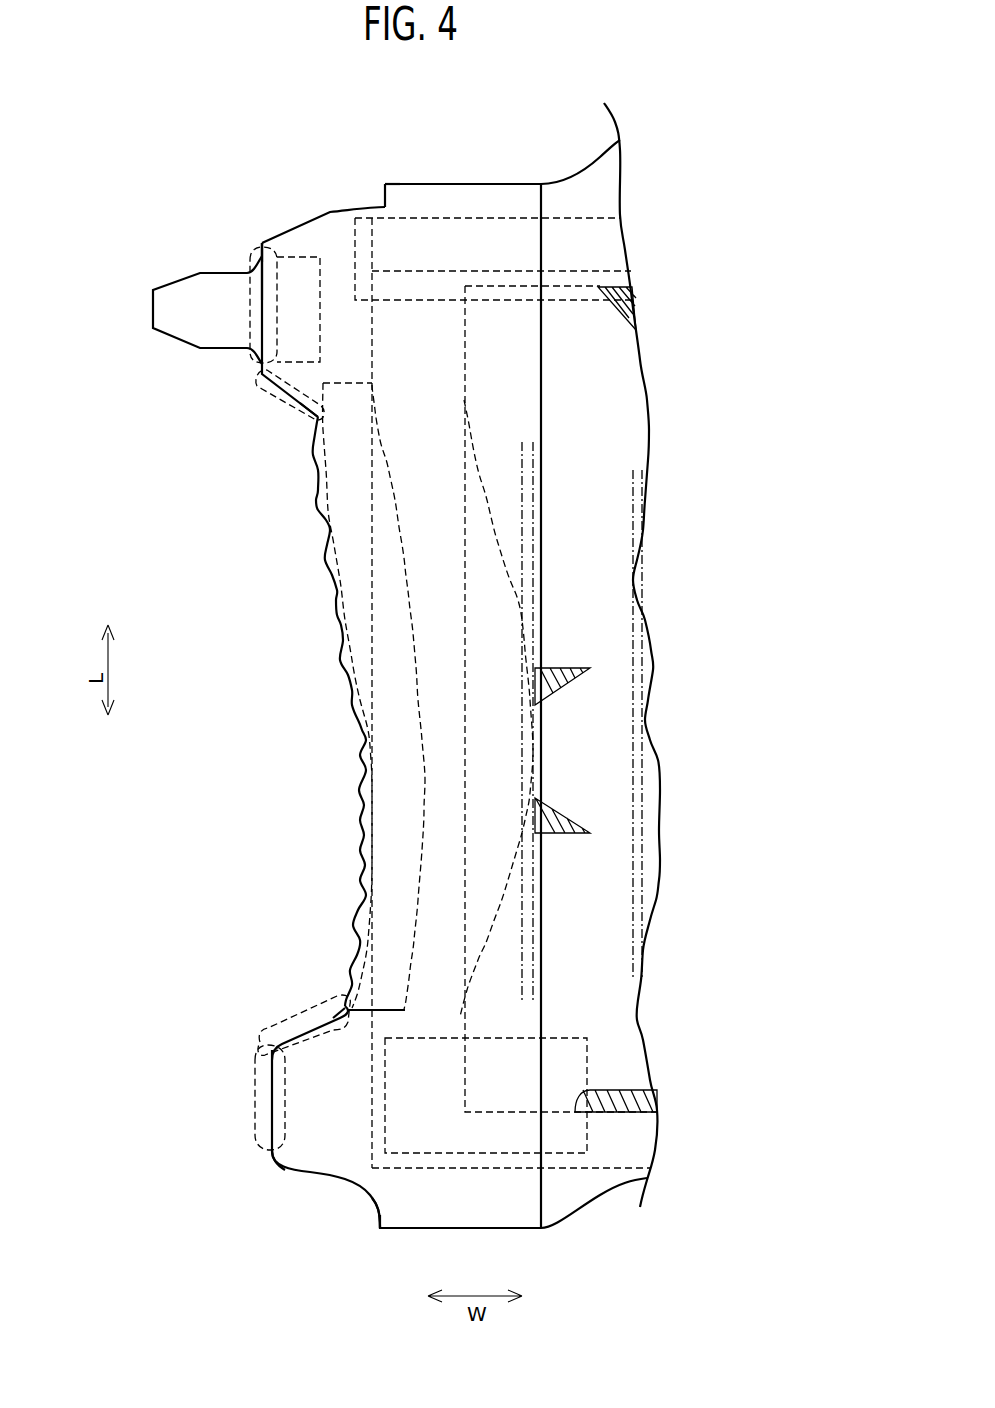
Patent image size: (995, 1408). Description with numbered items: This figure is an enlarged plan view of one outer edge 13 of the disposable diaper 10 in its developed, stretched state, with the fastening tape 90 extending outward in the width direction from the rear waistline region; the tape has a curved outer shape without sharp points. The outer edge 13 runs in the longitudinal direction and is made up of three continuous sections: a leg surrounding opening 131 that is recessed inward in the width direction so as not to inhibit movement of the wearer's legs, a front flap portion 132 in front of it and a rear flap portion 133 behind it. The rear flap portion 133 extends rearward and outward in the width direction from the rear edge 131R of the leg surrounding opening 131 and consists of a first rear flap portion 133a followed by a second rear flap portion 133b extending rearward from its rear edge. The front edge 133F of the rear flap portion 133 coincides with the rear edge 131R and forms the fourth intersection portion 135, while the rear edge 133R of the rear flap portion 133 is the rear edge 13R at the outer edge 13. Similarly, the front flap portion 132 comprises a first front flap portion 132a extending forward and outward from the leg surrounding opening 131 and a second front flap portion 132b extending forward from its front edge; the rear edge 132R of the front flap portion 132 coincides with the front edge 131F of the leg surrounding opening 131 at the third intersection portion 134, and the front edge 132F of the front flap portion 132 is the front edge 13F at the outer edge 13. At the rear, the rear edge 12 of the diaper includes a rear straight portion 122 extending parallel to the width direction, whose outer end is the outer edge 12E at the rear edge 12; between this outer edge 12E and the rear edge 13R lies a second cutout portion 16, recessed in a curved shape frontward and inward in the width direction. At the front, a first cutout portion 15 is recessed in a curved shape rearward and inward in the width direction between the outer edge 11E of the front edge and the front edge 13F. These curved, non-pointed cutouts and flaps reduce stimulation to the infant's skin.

The disposable diaper 10 is at (214, 190).
The rear edge 12 is at (520, 165).
The outer edge at the rear edge 12E is at (386, 192).
The rear straight portion 122 is at (455, 184).
The second cutout portion 16 is at (329, 206).
The outer edge 13 is at (221, 689).
The leg surrounding opening 131 is at (336, 591).
The rear flap portion 133 is at (262, 372).
The first rear flap portion 133a is at (262, 400).
The second rear flap portion 133b is at (258, 246).
The rear edge at the outer edge 13R is at (274, 219).
The rear edge of the rear flap portion 133R is at (262, 243).
The fourth intersection portion 135 is at (177, 440).
The front edge of the rear flap portion 133F is at (177, 440).
The rear edge of the leg surrounding opening 131R is at (318, 417).
The third intersection portion 134 is at (241, 974).
The front edge of the leg surrounding opening 131F is at (241, 974).
The rear edge of the front flap portion 132R is at (345, 1005).
The front flap portion 132 is at (272, 1096).
The first front flap portion 132a is at (270, 1020).
The second front flap portion 132b is at (257, 1150).
The front edge of the front flap portion 132F is at (292, 1196).
The front edge at the outer edge 13F is at (278, 1153).
The first cutout portion 15 is at (364, 1191).
The outer edge of the front edge 11E is at (381, 1228).
The fastening tape 90 is at (175, 291).